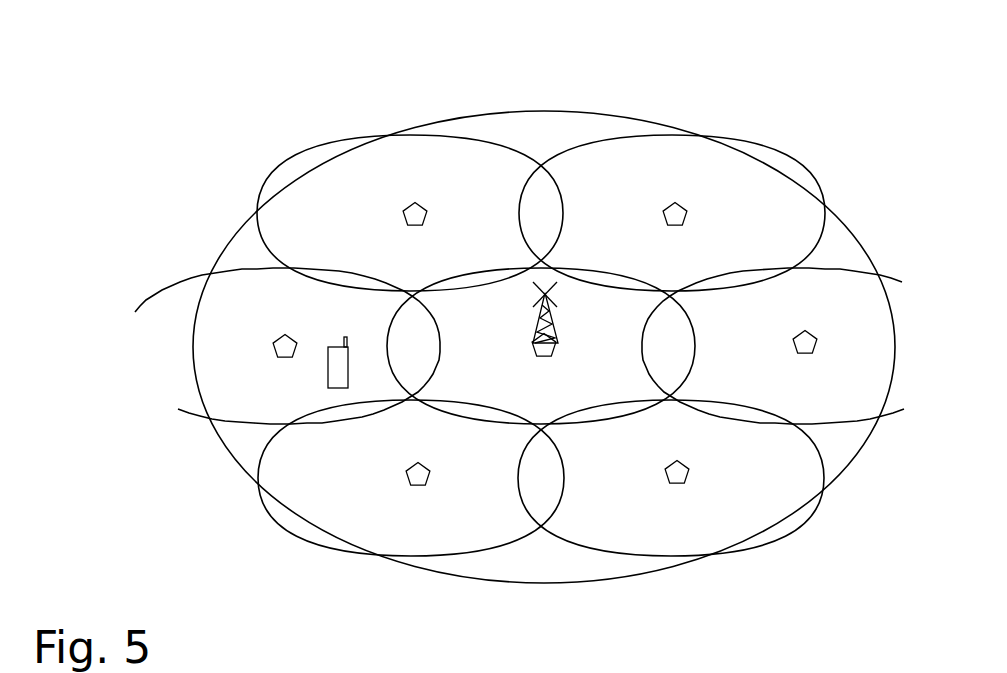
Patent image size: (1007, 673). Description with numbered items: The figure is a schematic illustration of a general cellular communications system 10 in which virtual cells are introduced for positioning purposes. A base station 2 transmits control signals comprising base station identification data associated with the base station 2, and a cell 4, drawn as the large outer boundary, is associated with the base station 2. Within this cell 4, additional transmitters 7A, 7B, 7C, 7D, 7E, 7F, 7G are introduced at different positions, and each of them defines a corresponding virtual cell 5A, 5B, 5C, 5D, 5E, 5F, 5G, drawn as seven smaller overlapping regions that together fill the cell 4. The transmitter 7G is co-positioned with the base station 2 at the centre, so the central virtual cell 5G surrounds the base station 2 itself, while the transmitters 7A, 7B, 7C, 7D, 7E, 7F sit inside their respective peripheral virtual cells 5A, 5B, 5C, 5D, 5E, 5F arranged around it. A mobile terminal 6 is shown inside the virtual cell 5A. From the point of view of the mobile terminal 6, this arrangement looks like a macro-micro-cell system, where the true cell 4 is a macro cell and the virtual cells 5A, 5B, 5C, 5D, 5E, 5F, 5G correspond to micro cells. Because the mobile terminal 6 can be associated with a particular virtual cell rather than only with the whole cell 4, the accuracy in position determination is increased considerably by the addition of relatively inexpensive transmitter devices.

The cellular communication system 10 is at (170, 103).
The cell 4 is at (545, 572).
The virtual cell 5A is at (207, 282).
The virtual cell 5B is at (372, 143).
The virtual cell 5C is at (707, 148).
The virtual cell 5D is at (878, 404).
The virtual cell 5E is at (712, 542).
The virtual cell 5F is at (396, 543).
The virtual cell 5G is at (492, 386).
The additional transmitter 7A is at (287, 358).
The additional transmitter 7B is at (403, 216).
The additional transmitter 7C is at (681, 206).
The additional transmitter 7D is at (805, 355).
The additional transmitter 7E is at (677, 485).
The additional transmitter 7F is at (420, 487).
The additional transmitter 7G is at (543, 358).
The mobile terminal 6 is at (348, 372).
The base station 2 is at (553, 323).